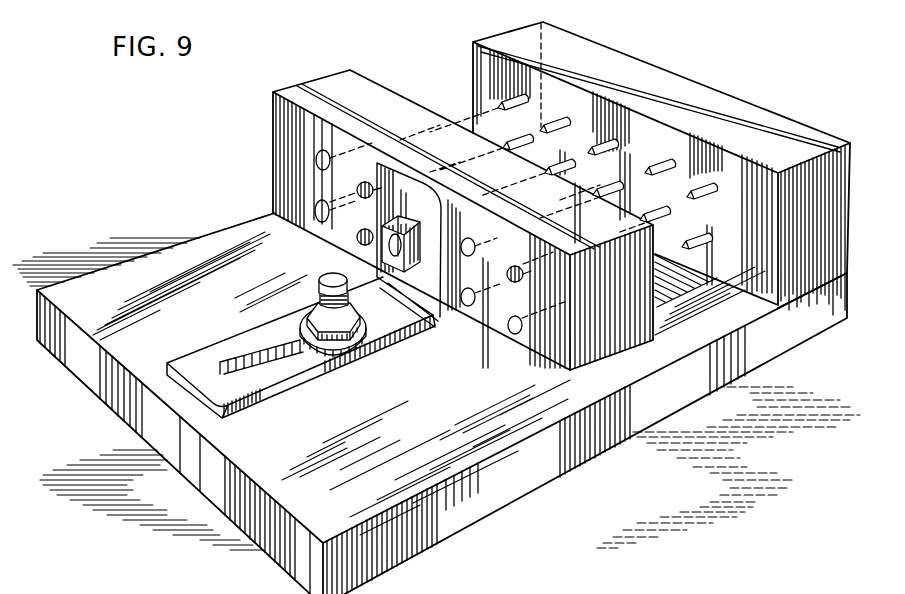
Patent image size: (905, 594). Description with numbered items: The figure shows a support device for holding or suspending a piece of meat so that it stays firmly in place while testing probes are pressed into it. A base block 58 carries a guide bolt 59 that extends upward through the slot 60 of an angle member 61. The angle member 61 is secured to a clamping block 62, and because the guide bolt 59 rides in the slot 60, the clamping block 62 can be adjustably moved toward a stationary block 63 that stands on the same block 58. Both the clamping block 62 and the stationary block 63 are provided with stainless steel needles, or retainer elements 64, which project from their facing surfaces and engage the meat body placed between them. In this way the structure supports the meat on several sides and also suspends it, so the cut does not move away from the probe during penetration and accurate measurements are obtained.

The block 58 is at (593, 450).
The guide bolt 59 is at (330, 276).
The slot 60 is at (279, 348).
The angle member 61 is at (394, 336).
The clamping block 62 is at (372, 93).
The stationary block 63 is at (745, 108).
The retainer elements 64 is at (651, 170).